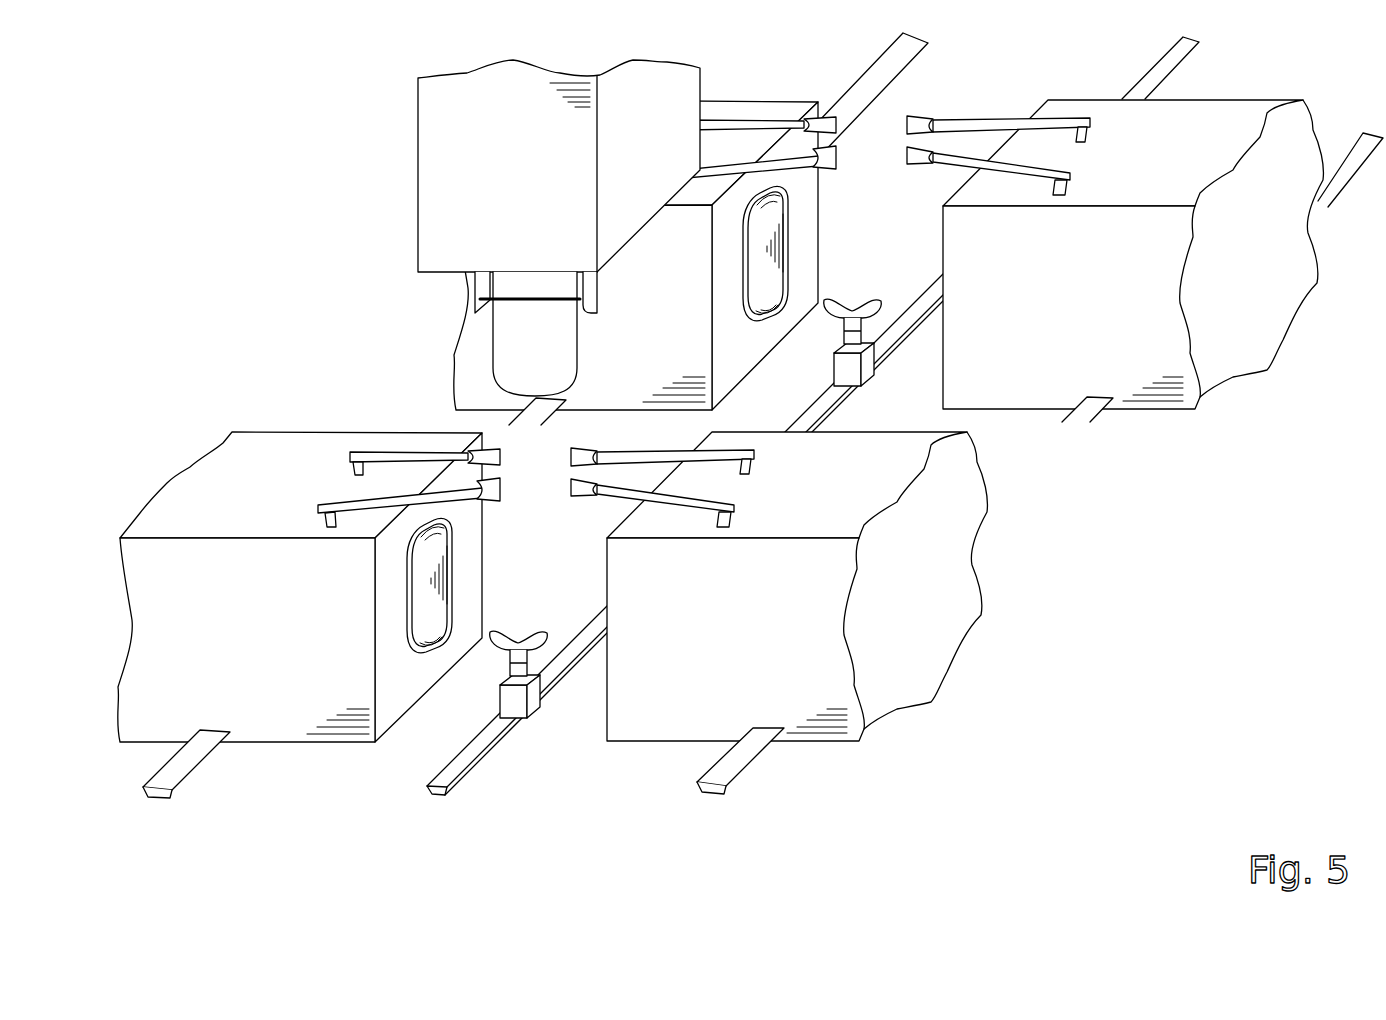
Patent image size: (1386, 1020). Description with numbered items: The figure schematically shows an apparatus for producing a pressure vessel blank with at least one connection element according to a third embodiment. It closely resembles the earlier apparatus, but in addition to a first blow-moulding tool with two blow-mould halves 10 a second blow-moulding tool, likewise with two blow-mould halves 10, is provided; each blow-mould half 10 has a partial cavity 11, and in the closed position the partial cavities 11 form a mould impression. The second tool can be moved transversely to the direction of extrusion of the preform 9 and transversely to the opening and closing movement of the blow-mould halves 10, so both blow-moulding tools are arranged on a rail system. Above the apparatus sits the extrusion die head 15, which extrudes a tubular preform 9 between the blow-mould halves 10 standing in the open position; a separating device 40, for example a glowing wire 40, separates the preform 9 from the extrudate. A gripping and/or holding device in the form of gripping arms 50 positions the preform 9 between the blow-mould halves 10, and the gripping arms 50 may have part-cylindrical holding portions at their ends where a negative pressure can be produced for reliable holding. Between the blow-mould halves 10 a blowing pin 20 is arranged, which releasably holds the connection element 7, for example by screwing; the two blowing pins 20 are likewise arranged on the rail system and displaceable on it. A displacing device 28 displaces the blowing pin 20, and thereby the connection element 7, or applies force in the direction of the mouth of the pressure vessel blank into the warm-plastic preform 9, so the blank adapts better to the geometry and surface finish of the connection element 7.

The connection element 7 is at (522, 647).
The preform 9 is at (518, 342).
The blow-mould halves 10 is at (270, 705).
The partial cavity 11 is at (422, 613).
The extrusion die head 15 is at (493, 163).
The blowing pin 20 is at (500, 672).
The displacing device 28 is at (513, 695).
The separating device 40 is at (538, 297).
The gripping arms 50 is at (405, 457).